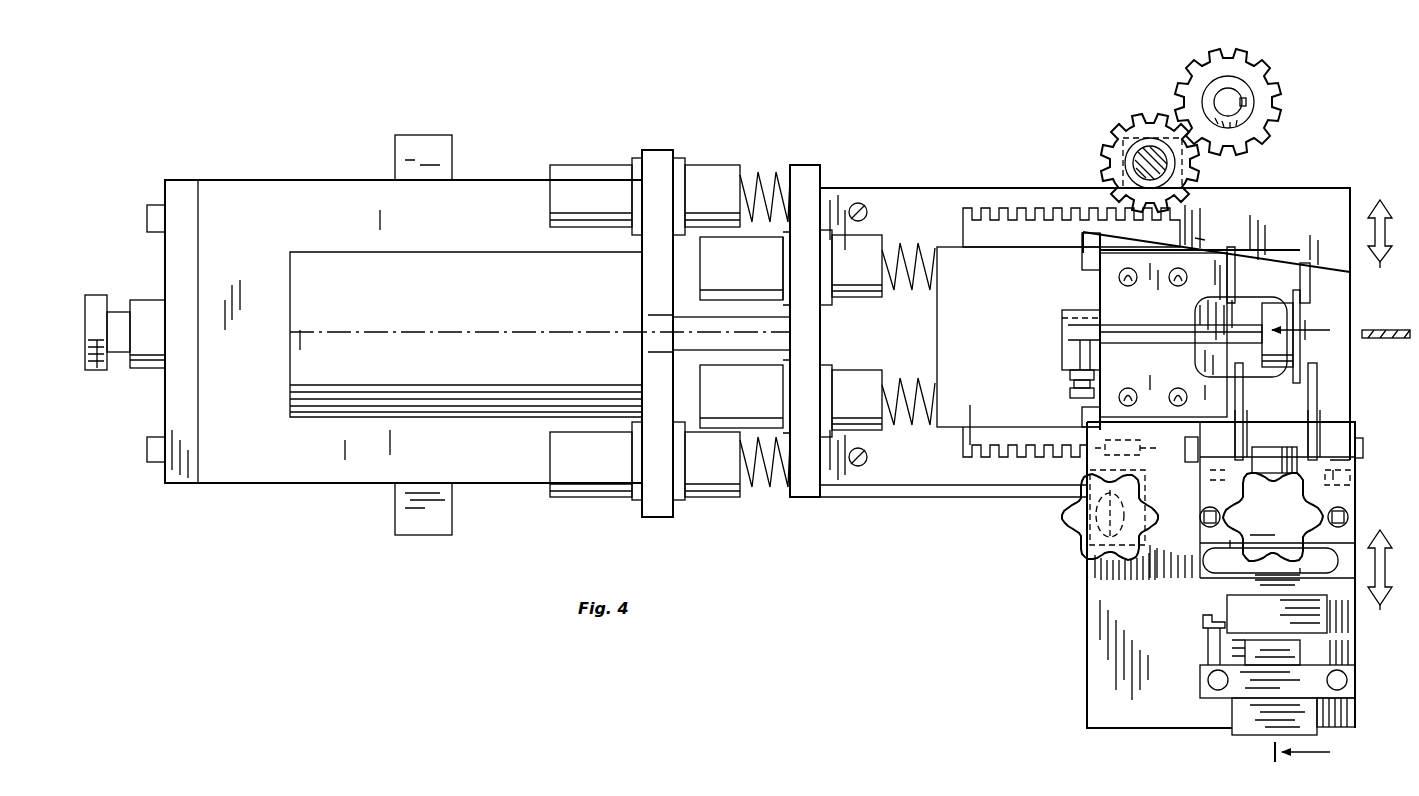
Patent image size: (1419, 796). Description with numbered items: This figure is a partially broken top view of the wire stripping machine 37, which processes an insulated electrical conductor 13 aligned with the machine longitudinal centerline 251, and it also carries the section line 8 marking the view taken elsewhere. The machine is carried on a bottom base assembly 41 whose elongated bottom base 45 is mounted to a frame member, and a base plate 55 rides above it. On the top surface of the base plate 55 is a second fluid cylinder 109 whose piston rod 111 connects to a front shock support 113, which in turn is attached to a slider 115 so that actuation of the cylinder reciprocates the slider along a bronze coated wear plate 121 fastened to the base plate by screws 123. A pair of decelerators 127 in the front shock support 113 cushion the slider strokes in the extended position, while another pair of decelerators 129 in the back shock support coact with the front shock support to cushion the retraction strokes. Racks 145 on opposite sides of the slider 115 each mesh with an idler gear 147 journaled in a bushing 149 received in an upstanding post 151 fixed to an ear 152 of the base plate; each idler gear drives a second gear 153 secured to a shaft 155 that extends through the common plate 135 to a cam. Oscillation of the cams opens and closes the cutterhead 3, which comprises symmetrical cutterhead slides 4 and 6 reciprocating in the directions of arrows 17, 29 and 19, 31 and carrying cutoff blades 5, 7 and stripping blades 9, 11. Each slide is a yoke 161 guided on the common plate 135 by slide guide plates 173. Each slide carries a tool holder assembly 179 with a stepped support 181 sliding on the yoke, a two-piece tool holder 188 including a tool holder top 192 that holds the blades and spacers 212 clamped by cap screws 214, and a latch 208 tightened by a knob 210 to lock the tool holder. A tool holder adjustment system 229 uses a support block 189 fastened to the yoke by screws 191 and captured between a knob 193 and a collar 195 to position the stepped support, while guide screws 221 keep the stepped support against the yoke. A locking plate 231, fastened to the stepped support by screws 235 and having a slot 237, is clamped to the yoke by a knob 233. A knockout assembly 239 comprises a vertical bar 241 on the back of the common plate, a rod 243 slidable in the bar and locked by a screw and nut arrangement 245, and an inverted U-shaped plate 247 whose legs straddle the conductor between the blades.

The cutterhead 3 is at (1078, 605).
The cutterhead slide 4 is at (1078, 578).
The cutoff blade 5 is at (1235, 392).
The cutterhead slide 6 is at (1202, 238).
The cutoff blade 7 is at (1238, 246).
The section line 8 is at (1310, 537).
The stripping blade 9 is at (1300, 402).
The stripping blade 11 is at (1308, 268).
The insulated electrical conductor 13 is at (1404, 328).
The cutting stroke direction arrow 17 is at (1385, 542).
The cutting stroke direction arrow 19 is at (1388, 272).
The cutting stroke direction arrow 29 is at (1392, 578).
The cutting stroke direction arrow 31 is at (1378, 200).
The wire stripping machine 37 is at (842, 500).
The bottom base assembly 41 is at (438, 128).
The bottom base 45 is at (400, 148).
The base plate 55 is at (282, 190).
The second fluid cylinder 109 is at (460, 304).
The piston rod 111 is at (725, 320).
The front shock support 113 is at (805, 165).
The slider 115 is at (932, 331).
The wear plate 121 is at (946, 190).
The screws 123 is at (857, 203).
The decelerators 127 is at (880, 237).
The decelerators 129 is at (715, 165).
The common plate 135 is at (1145, 364).
The racks 145 is at (985, 208).
The idler gear 147 is at (1140, 120).
The bushing 149 is at (1132, 148).
The upstanding post 151 is at (1135, 165).
The ear 152 is at (1185, 172).
The second gear 153 is at (1245, 62).
The shaft 155 is at (1240, 100).
The yoke 161 is at (1110, 730).
The slide guide plate 173 is at (1082, 252).
The tool holder assembly 179 is at (1356, 570).
The stepped support 181 is at (1305, 535).
The two-piece tool holder 188 is at (1363, 483).
The support block 189 is at (1225, 665).
The screws 191 is at (1208, 680).
The tool holder top 192 is at (1352, 478).
The knob 193 is at (1240, 713).
The collar 195 is at (1300, 655).
The latch 208 is at (1280, 455).
The knob 210 is at (1253, 550).
The spacers 212 is at (1290, 432).
The cap screws 214 is at (1360, 445).
The guide screws 221 is at (1350, 522).
The tool holder adjustment system 229 is at (1215, 740).
The locking plate 231 is at (1180, 532).
The knob 233 is at (1085, 545).
The screws 235 is at (1120, 440).
The slot 237 is at (1075, 524).
The knockout assembly 239 is at (1058, 328).
The vertical bar 241 is at (1072, 310).
The rod 243 is at (1140, 328).
The screw and nut arrangement 245 is at (1068, 393).
The inverted U-shaped plate 247 is at (1300, 287).
The machine longitudinal centerline 251 is at (432, 332).